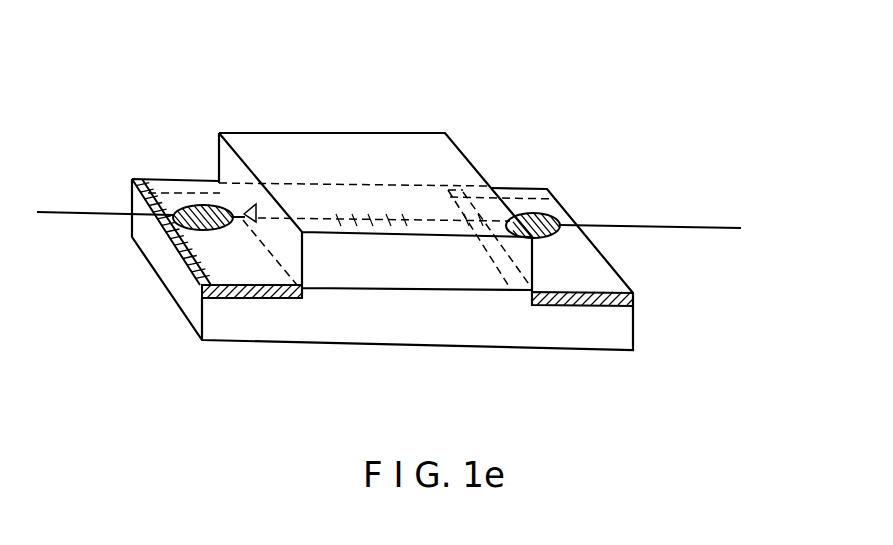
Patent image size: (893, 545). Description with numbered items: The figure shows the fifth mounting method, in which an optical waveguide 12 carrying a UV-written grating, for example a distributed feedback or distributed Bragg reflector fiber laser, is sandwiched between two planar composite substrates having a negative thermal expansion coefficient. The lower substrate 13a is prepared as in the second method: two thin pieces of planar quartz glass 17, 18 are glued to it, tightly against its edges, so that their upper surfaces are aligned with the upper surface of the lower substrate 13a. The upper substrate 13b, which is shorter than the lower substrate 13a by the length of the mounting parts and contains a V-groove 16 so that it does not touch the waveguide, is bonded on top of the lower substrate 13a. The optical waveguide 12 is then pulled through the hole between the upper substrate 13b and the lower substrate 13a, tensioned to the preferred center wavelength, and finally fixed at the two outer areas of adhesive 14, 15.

The optical waveguide 12 is at (687, 226).
The lower substrate 13a is at (613, 325).
The upper substrate 13b is at (437, 148).
The area of adhesive 14 is at (212, 208).
The area of adhesive 15 is at (555, 205).
The V-groove 16 is at (243, 213).
The quartz glass piece 17 is at (215, 253).
The quartz glass piece 18 is at (577, 265).